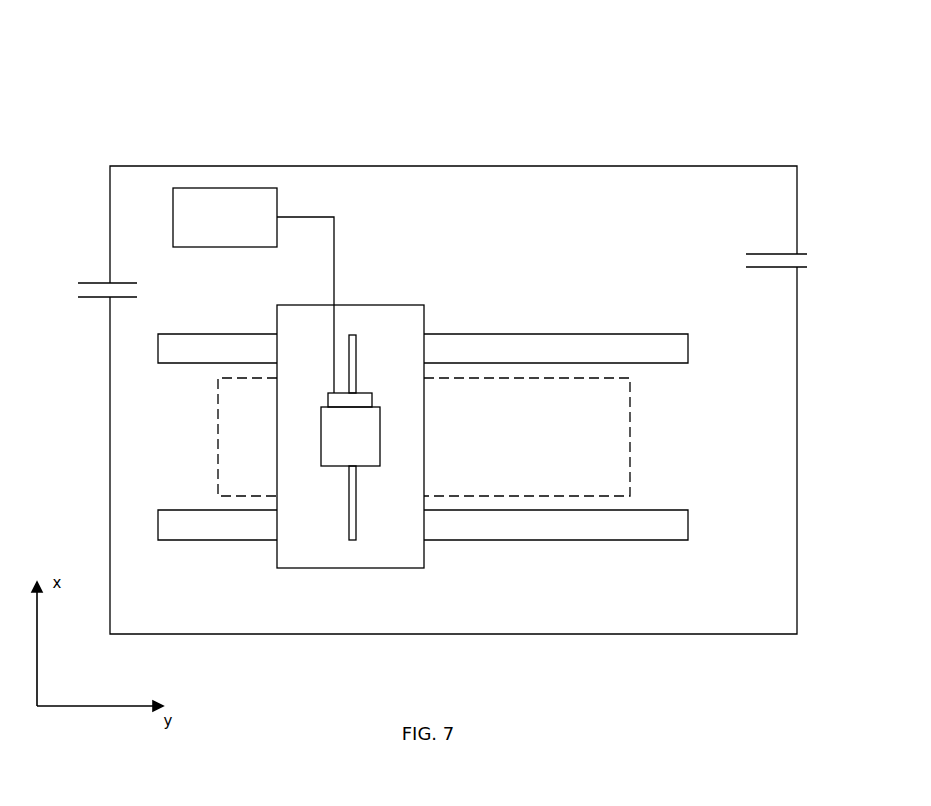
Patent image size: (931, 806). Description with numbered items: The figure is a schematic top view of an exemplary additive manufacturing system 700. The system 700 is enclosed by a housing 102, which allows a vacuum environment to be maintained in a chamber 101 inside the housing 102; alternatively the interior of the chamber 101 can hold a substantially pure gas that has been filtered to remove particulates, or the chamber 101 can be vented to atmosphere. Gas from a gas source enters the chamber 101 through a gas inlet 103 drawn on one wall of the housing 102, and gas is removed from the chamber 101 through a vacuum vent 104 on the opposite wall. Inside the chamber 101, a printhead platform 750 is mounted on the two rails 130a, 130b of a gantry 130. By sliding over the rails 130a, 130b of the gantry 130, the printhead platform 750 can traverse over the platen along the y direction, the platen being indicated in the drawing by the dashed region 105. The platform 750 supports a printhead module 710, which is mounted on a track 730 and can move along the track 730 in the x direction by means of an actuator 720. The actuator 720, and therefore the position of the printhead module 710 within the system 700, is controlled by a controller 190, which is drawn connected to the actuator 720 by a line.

The additive manufacturing system 700 is at (458, 67).
The housing 102 is at (462, 165).
The chamber 101 is at (647, 214).
The gas inlet 103 is at (80, 294).
The vacuum vent 104 is at (797, 263).
The controller 190 is at (253, 290).
The gantry 130 is at (733, 410).
The rail 130a is at (663, 354).
The rail 130b is at (668, 523).
The substrate region 105 is at (424, 437).
The printhead platform 750 is at (392, 554).
The actuator 720 is at (363, 402).
The printhead module 710 is at (334, 445).
The track 730 is at (346, 517).